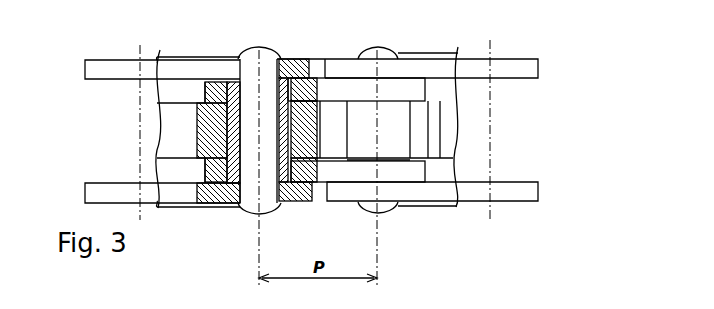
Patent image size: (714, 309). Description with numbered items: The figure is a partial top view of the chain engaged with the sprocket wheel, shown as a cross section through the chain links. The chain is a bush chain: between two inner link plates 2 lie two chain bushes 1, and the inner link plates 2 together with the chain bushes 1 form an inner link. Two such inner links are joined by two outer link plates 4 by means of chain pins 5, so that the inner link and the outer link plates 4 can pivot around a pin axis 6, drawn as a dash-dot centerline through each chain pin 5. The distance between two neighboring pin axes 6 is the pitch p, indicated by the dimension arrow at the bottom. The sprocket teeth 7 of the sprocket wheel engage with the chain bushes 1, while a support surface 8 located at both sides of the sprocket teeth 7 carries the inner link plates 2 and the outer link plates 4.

The chain bush 1 is at (197, 132).
The inner link plate 2 is at (415, 93).
The outer link plate 4 is at (172, 68).
The chain pin 5 is at (271, 60).
The pin axis 6 is at (138, 47).
The sprocket tooth 7 is at (220, 92).
The support surface 8 is at (170, 93).